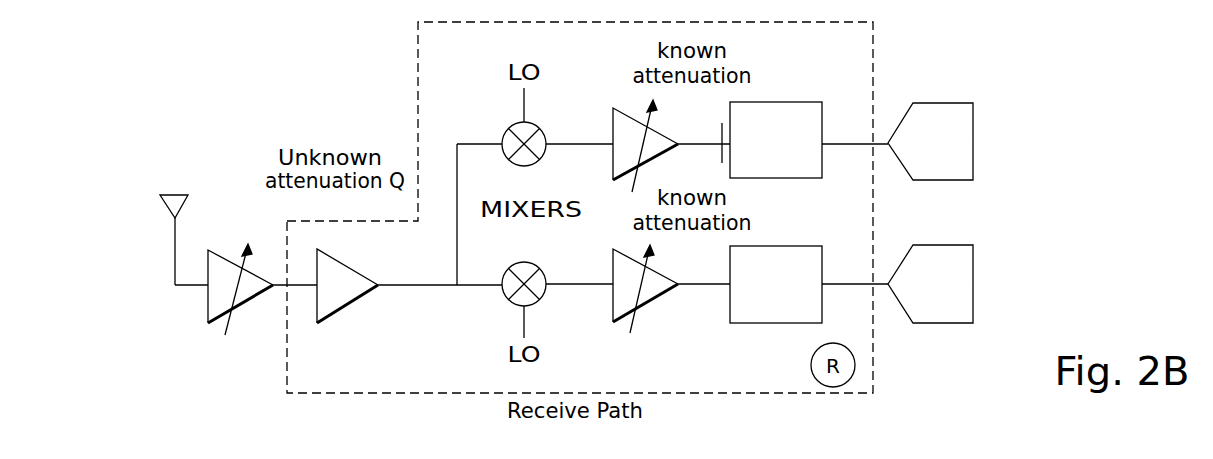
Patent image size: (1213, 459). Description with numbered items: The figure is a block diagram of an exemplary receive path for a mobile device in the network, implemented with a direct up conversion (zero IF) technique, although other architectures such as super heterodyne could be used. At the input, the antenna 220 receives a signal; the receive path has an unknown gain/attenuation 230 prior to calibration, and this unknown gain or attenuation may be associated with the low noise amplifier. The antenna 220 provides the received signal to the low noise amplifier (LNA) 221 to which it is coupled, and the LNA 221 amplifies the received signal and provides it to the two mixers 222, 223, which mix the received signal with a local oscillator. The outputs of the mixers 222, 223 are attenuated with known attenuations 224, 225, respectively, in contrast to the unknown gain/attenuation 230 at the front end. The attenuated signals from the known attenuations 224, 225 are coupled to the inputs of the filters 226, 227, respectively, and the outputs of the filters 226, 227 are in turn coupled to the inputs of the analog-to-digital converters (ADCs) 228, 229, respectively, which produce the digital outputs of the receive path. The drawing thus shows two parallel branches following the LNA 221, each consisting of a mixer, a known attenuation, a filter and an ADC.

The antenna 220 is at (161, 197).
The low noise amplifier 221 is at (340, 300).
The mixer 222 is at (512, 163).
The mixer 223 is at (528, 262).
The known attenuation 224 is at (622, 112).
The known attenuation 225 is at (657, 270).
The filter 226 is at (817, 171).
The filter 227 is at (817, 317).
The analog-to-digital converter 228 is at (925, 172).
The analog-to-digital converter 229 is at (925, 316).
The unknown gain/attenuation 230 is at (279, 264).